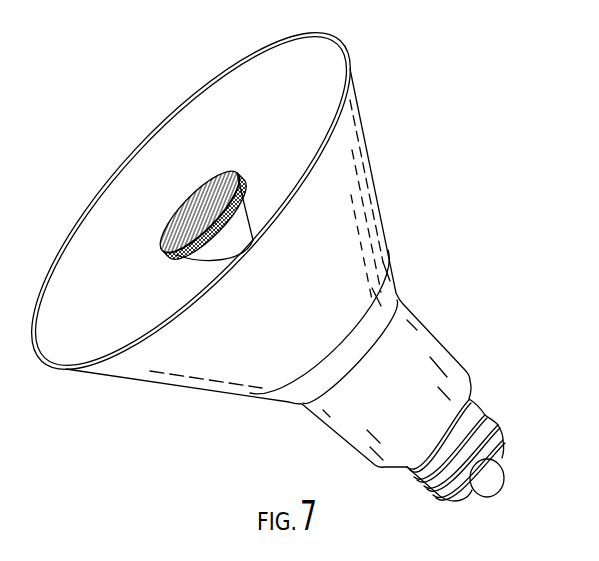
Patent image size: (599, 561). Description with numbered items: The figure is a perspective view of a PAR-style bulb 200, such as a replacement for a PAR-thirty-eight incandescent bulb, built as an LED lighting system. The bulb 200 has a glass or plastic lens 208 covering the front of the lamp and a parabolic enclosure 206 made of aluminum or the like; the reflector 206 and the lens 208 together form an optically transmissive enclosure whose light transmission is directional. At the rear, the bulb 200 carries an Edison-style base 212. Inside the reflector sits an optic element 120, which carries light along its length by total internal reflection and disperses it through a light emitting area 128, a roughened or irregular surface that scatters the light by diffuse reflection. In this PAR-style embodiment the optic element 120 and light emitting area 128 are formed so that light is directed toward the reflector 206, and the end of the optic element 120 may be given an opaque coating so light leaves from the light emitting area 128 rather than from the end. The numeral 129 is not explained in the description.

The PAR-style bulb 200 is at (380, 93).
The parabolic enclosure 206 is at (365, 203).
The lens 208 is at (243, 80).
The Edison-style base 212 is at (492, 410).
The optic element 120 is at (160, 256).
The light emitting area 128 is at (238, 203).
The light emitting surface 129 is at (220, 190).